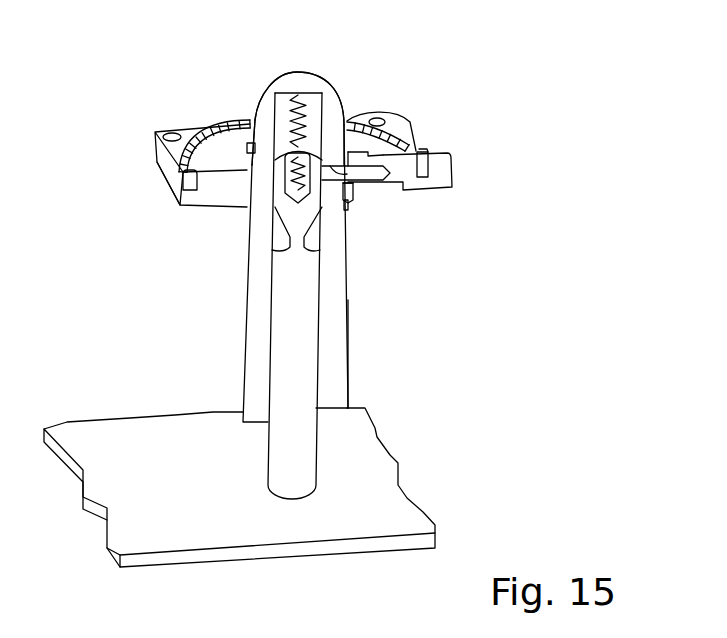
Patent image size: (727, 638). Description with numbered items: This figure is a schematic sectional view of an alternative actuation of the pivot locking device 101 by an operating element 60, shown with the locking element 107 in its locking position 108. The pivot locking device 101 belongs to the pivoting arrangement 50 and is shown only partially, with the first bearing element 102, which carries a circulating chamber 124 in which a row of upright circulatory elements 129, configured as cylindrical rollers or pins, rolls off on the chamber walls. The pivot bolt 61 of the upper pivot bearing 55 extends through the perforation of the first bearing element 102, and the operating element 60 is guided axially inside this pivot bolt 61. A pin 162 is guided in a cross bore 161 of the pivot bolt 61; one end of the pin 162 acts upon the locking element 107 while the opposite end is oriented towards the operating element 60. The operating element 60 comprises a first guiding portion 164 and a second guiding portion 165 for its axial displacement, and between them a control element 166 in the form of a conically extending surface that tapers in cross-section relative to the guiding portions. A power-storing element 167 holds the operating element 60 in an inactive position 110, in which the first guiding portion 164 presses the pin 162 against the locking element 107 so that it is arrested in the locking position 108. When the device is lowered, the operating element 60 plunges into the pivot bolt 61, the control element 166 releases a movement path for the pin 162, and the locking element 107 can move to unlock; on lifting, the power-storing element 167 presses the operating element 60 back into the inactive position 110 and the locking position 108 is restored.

The pivoting arrangement 50 is at (345, 68).
The upper pivot bearing 55 is at (357, 97).
The operating element 60 is at (307, 438).
The pivot bolt 61 is at (333, 292).
The pivot locking device 101 is at (137, 145).
The first bearing element 102 is at (413, 130).
The locking element 107 is at (440, 168).
The locking position 108 is at (449, 193).
The inactive position 110 is at (331, 463).
The circulating chamber 124 is at (178, 183).
The circulatory elements 129 is at (178, 205).
The cross bore 161 is at (352, 172).
The pin 162 is at (372, 167).
The first guiding portion 164 is at (268, 190).
The second guiding portion 165 is at (318, 338).
The control element 166 is at (272, 228).
The power-storing element 167 is at (293, 107).